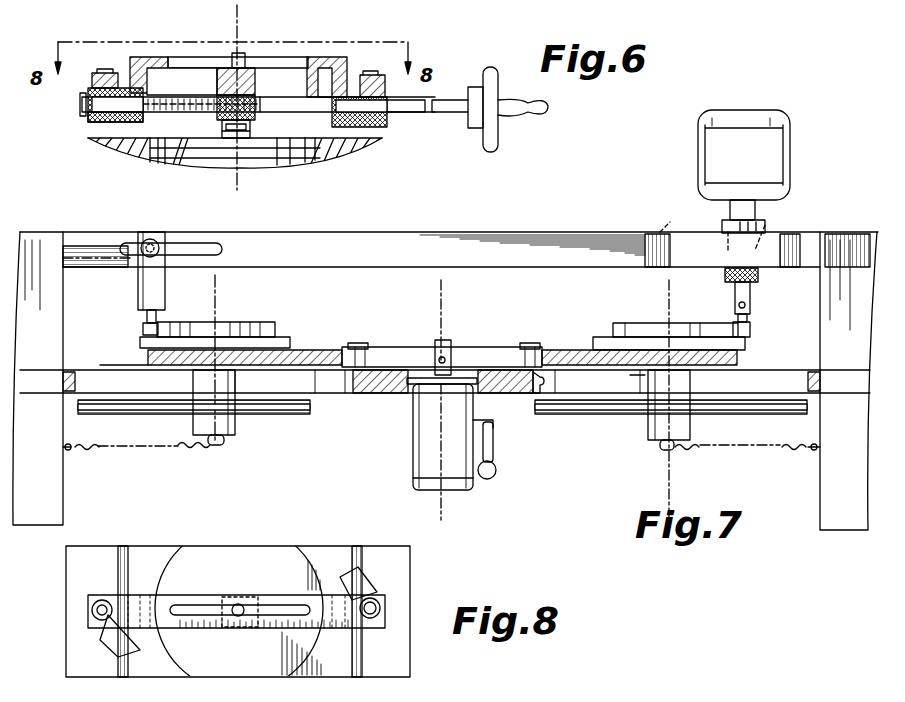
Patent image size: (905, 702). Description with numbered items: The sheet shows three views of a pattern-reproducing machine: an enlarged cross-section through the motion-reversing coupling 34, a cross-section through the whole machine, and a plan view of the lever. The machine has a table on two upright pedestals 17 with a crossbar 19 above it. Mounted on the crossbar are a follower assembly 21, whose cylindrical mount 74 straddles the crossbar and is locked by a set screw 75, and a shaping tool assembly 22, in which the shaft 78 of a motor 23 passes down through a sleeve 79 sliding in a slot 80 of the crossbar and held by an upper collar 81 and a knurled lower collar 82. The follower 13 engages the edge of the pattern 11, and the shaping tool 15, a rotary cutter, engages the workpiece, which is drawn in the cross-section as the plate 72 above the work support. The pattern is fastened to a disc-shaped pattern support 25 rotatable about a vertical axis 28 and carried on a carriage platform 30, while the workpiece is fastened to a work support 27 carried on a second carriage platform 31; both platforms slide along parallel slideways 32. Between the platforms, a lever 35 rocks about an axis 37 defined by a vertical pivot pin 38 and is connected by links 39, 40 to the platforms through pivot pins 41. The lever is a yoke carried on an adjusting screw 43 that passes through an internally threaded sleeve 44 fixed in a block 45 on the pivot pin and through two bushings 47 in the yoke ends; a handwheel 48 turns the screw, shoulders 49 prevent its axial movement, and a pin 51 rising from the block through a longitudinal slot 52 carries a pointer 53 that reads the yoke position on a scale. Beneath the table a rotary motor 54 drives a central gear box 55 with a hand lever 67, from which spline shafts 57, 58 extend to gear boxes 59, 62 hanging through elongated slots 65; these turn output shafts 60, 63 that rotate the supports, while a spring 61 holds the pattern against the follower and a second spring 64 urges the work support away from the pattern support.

In FIG. 7, the pattern 11 is at (275, 305).
In FIG. 7, the follower 13 is at (140, 326).
In FIG. 7, the shaping tool 15 is at (752, 328).
In FIG. 7, the pedestal 17 is at (60, 495).
In FIG. 7, the crossbar 19 is at (460, 238).
In FIG. 7, the follower assembly 21 is at (132, 270).
In FIG. 7, the shaping tool assembly 22 is at (785, 213).
In FIG. 7, the motor 23 is at (770, 118).
In FIG. 7, the pattern support 25 is at (318, 316).
In FIG. 7, the work support 27 is at (592, 335).
In FIG. 7, the vertical axis 28 is at (218, 283).
In FIG. 7, the carriage platform 30 is at (328, 345).
In FIG. 7, the carriage platform 31 is at (740, 365).
In FIG. 7, the slideway 32 is at (115, 360).
In FIG. 8, the slideway 32 is at (135, 560).
In FIG. 6, the motion-reversing coupling 34 is at (408, 155).
In FIG. 7, the motion-reversing coupling 34 is at (463, 325).
In FIG. 6, the lever 35 is at (360, 58).
In FIG. 7, the lever 35 is at (452, 340).
In FIG. 8, the lever 35 is at (360, 630).
In FIG. 6, the pivotal axis 37 is at (237, 17).
In FIG. 7, the pivotal axis 37 is at (443, 300).
In FIG. 6, the pivot pin 38 is at (230, 160).
In FIG. 6, the link 39 is at (105, 73).
In FIG. 7, the link 39 is at (388, 312).
In FIG. 8, the link 39 is at (112, 643).
In FIG. 6, the link 40 is at (412, 58).
In FIG. 7, the link 40 is at (518, 343).
In FIG. 8, the link 40 is at (368, 590).
In FIG. 8, the pivot pin 41 is at (95, 610).
In FIG. 6, the adjusting screw 43 is at (268, 112).
In FIG. 6, the internally threaded sleeve 44 is at (212, 118).
In FIG. 6, the block 45 is at (218, 80).
In FIG. 6, the bushing 47 is at (90, 130).
In FIG. 6, the handwheel 48 is at (466, 8).
In FIG. 6, the shoulder 49 is at (84, 95).
In FIG. 6, the pin 51 is at (250, 58).
In FIG. 8, the pin 51 is at (240, 605).
In FIG. 6, the longitudinal slot 52 is at (292, 58).
In FIG. 8, the pointer 53 is at (240, 620).
In FIG. 7, the rotary motor 54 is at (420, 478).
In FIG. 7, the gear box 55 is at (420, 425).
In FIG. 7, the spline shaft 57 is at (300, 415).
In FIG. 7, the spline shaft 58 is at (565, 415).
In FIG. 7, the gear box 59 is at (232, 438).
In FIG. 7, the output shaft 60 is at (222, 395).
In FIG. 7, the spring 61 is at (175, 458).
In FIG. 7, the gear box 62 is at (652, 425).
In FIG. 7, the output shaft 63 is at (645, 372).
In FIG. 7, the second spring 64 is at (678, 452).
In FIG. 7, the elongated slot 65 is at (78, 400).
In FIG. 7, the hand lever 67 is at (492, 445).
In FIG. 7, the work table 72 is at (635, 300).
In FIG. 7, the cylindrical mount 74 is at (168, 293).
In FIG. 7, the set screw 75 is at (155, 240).
In FIG. 7, the shaft 78 is at (752, 312).
In FIG. 7, the sleeve 79 is at (775, 235).
In FIG. 7, the slot 80 is at (655, 232).
In FIG. 7, the collar 81 is at (720, 228).
In FIG. 7, the collar 82 is at (722, 280).